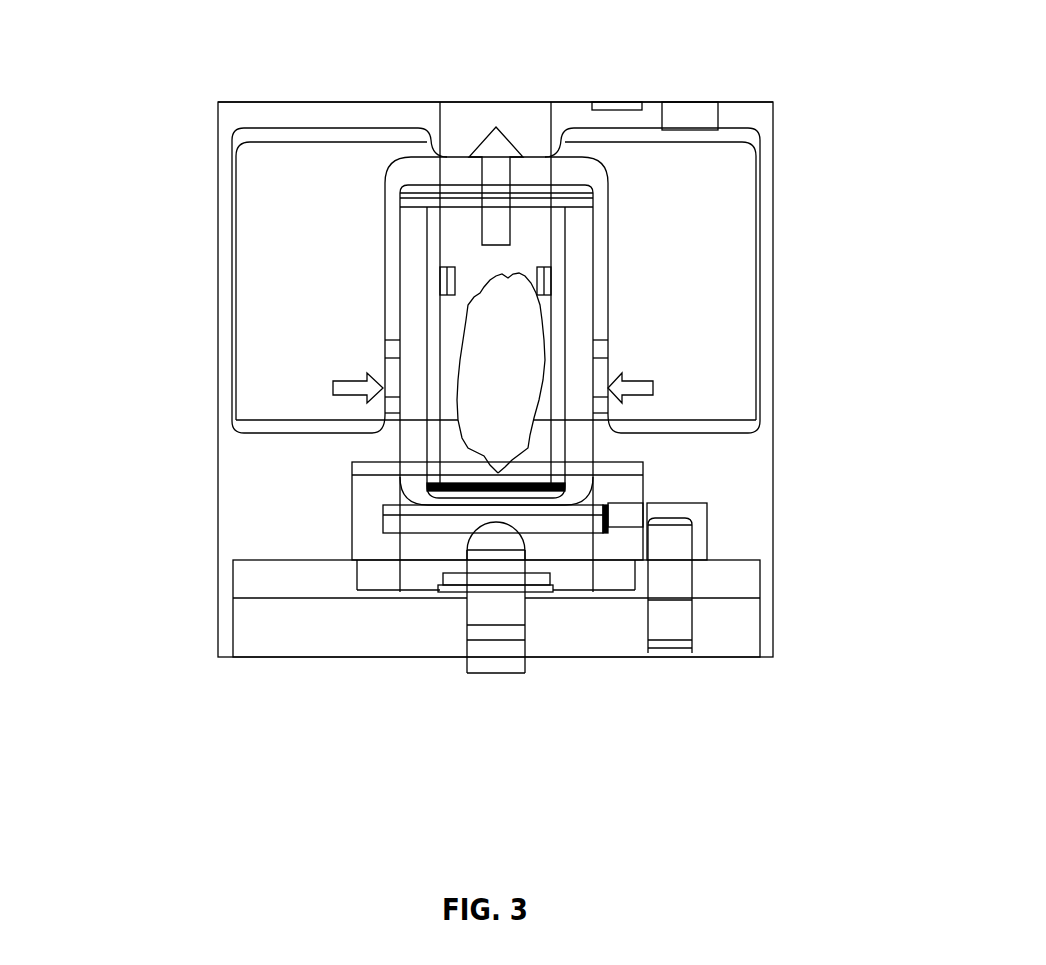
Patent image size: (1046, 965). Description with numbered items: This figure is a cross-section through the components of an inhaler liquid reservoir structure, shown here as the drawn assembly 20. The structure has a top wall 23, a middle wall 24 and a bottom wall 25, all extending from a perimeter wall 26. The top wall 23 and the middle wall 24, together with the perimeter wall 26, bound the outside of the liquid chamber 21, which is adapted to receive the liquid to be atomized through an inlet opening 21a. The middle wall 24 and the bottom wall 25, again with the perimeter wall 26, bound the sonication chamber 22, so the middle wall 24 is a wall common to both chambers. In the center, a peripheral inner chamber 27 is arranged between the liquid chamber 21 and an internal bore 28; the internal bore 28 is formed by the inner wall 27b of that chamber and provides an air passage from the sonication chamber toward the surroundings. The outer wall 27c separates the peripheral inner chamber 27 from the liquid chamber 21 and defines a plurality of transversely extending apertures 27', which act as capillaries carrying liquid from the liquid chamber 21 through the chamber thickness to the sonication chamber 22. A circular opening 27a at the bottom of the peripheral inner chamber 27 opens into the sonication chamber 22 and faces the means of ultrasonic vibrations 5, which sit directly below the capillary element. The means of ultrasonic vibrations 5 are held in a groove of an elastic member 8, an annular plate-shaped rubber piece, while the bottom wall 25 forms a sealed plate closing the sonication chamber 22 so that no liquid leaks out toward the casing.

The gas combustion device 20 is at (186, 139).
The top wall 23 is at (270, 100).
The perimeter wall 26 is at (217, 247).
The liquid chamber 21 is at (735, 197).
The inlet opening 21a is at (698, 102).
The inner wall 27b is at (567, 335).
The outer wall 27c is at (608, 270).
The peripheral inner chamber 27 is at (325, 352).
The internal bore 28 is at (553, 102).
The apertures 27' is at (627, 265).
The circular opening 27a is at (452, 482).
The middle wall 24 is at (352, 478).
The means of ultrasonic vibrations 5 is at (371, 521).
The sonication chamber 22 is at (747, 530).
The bottom wall 25 is at (283, 618).
The elastic member 8 is at (383, 553).